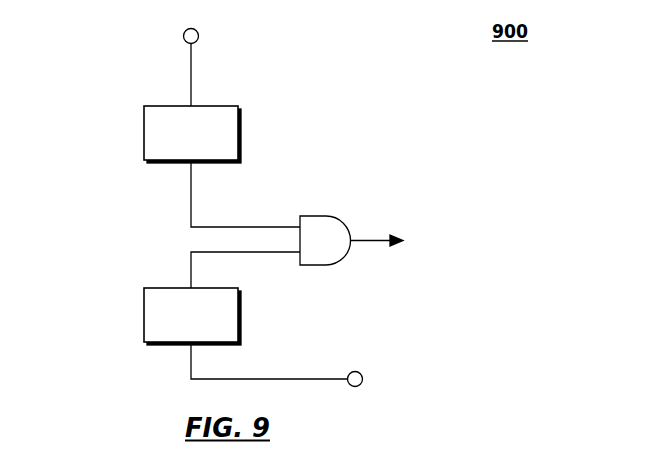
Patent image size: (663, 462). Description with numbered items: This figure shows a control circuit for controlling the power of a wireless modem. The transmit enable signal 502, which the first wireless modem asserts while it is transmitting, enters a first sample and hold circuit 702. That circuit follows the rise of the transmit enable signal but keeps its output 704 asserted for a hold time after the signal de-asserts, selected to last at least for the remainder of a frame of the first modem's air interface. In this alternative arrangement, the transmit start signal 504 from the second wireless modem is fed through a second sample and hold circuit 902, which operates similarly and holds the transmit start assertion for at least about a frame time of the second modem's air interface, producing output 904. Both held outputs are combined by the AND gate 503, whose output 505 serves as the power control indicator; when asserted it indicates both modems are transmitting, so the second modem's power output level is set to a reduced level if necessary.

The transmit enable signal 502 is at (190, 75).
The sample and hold circuit 702 is at (238, 127).
The first sample-and-hold output 704 is at (191, 192).
The second sample-and-hold output 904 is at (191, 270).
The second sample and hold circuit 902 is at (144, 313).
The transmit start signal 504 is at (191, 365).
The AND gate 503 is at (315, 218).
The AND gate output 505 is at (378, 238).